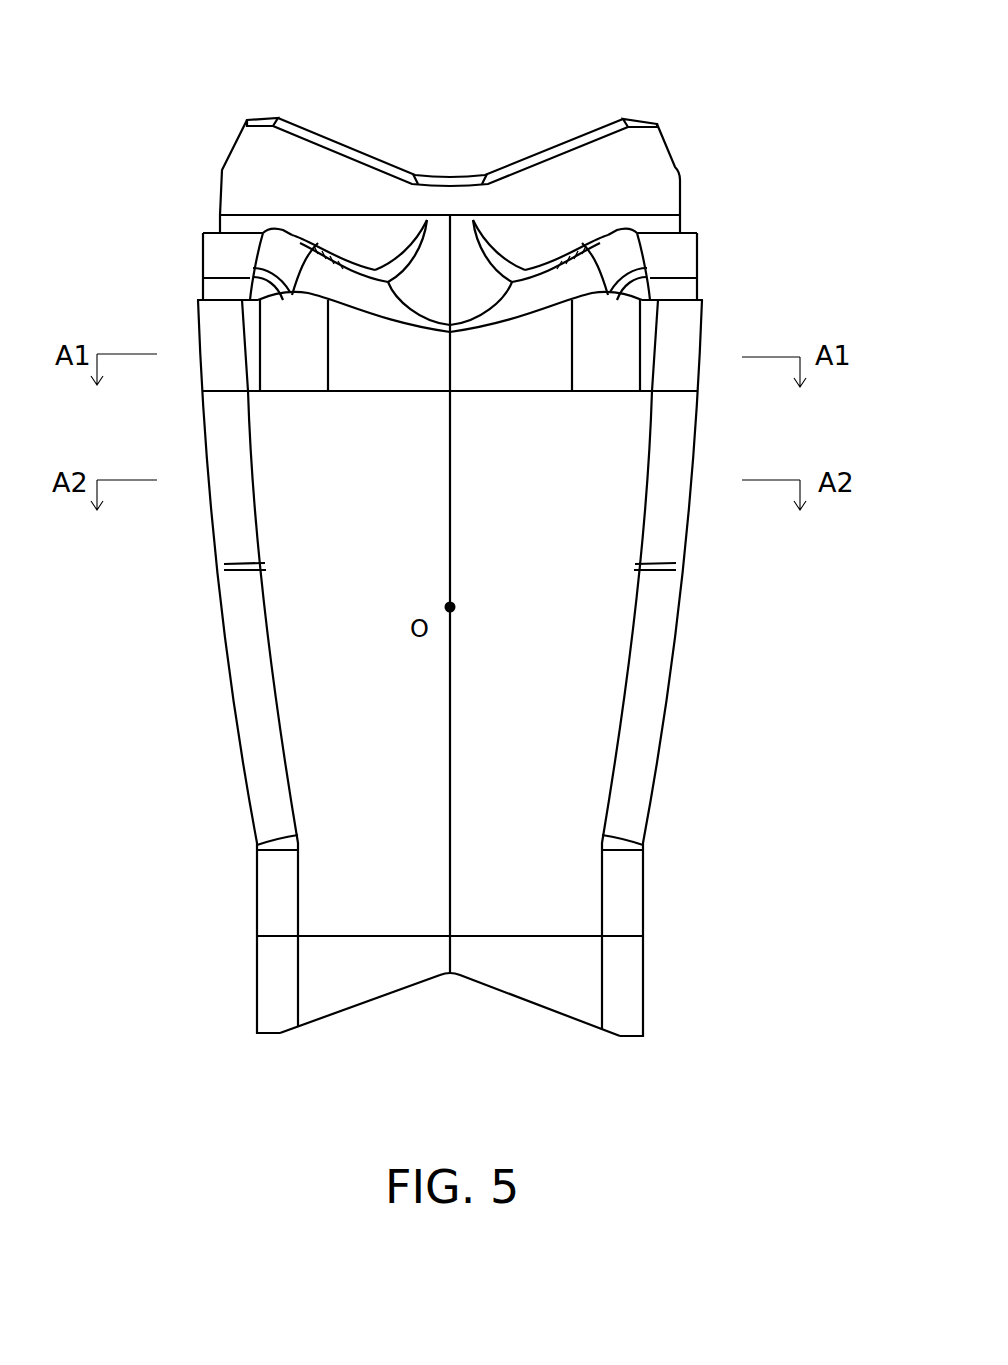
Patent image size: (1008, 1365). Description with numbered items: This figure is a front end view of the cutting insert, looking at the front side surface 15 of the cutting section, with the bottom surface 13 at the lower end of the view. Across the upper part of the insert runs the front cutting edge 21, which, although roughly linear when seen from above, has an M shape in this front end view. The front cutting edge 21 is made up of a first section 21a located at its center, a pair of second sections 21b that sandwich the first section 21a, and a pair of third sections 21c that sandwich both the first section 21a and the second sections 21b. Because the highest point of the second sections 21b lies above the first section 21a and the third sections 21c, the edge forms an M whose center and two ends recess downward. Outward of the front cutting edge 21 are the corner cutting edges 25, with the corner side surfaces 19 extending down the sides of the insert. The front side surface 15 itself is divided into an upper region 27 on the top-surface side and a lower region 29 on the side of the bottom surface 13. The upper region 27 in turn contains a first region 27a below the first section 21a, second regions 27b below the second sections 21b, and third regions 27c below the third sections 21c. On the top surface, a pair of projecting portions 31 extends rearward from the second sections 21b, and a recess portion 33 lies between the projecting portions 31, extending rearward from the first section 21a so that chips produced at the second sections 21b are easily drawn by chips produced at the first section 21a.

The bottom surface 13 is at (383, 997).
The front side surface 15 is at (457, 358).
The corner side surfaces 19 is at (645, 688).
The front cutting edge 21 is at (442, 198).
The first section 21a is at (385, 320).
The second sections 21b is at (305, 292).
The third sections 21c is at (243, 300).
The corner cutting edges 25 is at (217, 297).
The upper region 27 is at (442, 447).
The first region 27a is at (383, 367).
The second regions 27b is at (287, 353).
The third regions 27c is at (250, 330).
The lower region 29 is at (355, 680).
The projecting portions 31 is at (328, 247).
The recess portion 33 is at (408, 320).